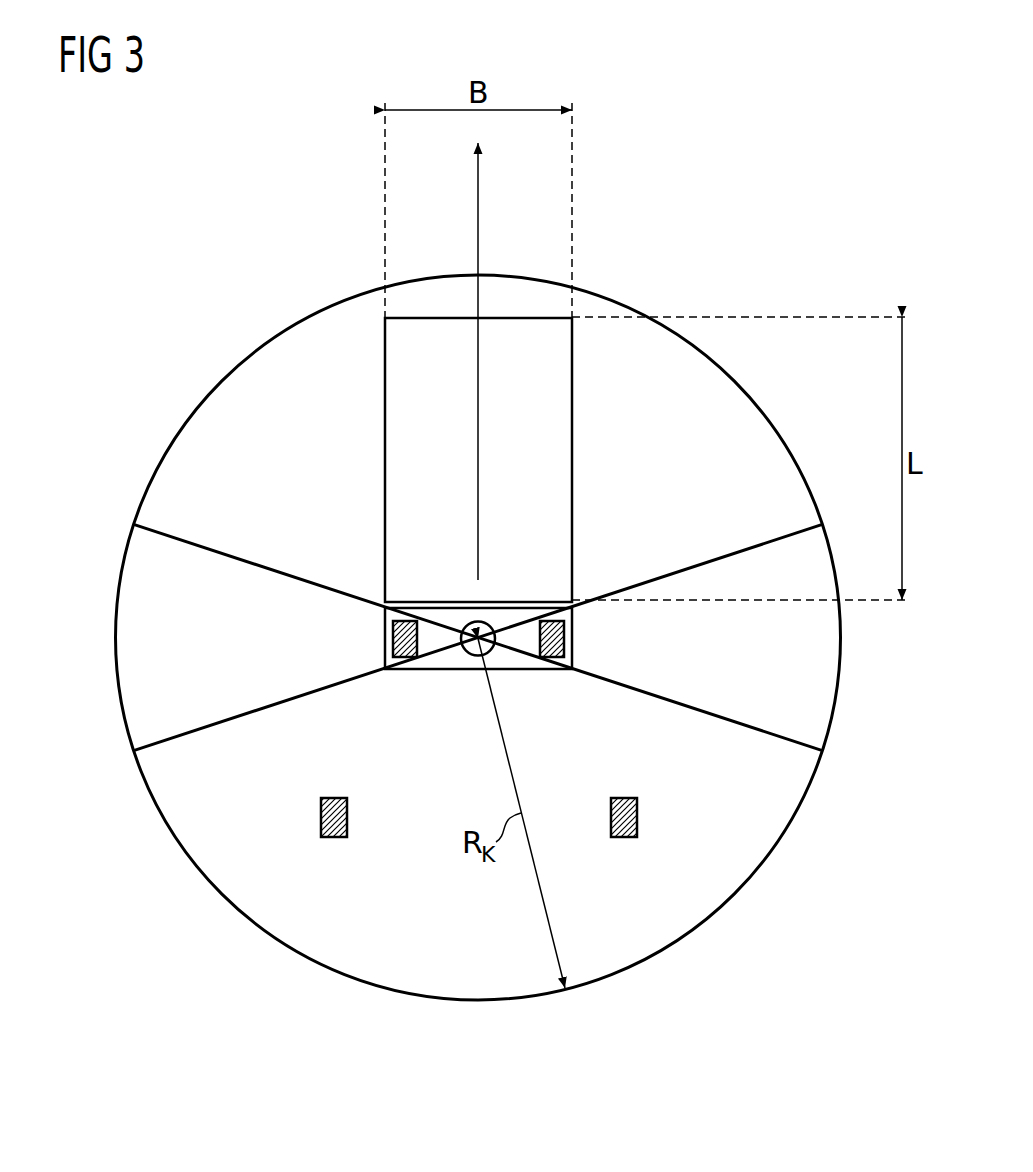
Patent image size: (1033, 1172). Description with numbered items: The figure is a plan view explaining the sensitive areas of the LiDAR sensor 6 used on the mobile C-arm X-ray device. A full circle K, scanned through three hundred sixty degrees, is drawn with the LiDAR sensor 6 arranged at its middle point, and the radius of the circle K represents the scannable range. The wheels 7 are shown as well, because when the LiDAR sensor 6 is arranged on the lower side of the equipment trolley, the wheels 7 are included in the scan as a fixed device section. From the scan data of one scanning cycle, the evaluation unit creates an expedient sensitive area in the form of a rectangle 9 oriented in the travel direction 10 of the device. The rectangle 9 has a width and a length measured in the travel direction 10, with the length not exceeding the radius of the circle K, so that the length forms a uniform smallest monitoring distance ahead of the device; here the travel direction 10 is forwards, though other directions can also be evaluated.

The LiDAR sensor 6 is at (467, 660).
The wheels 7 is at (393, 640).
The rectangle 9 is at (385, 458).
The travel direction 10 is at (478, 214).
The circle K is at (288, 328).